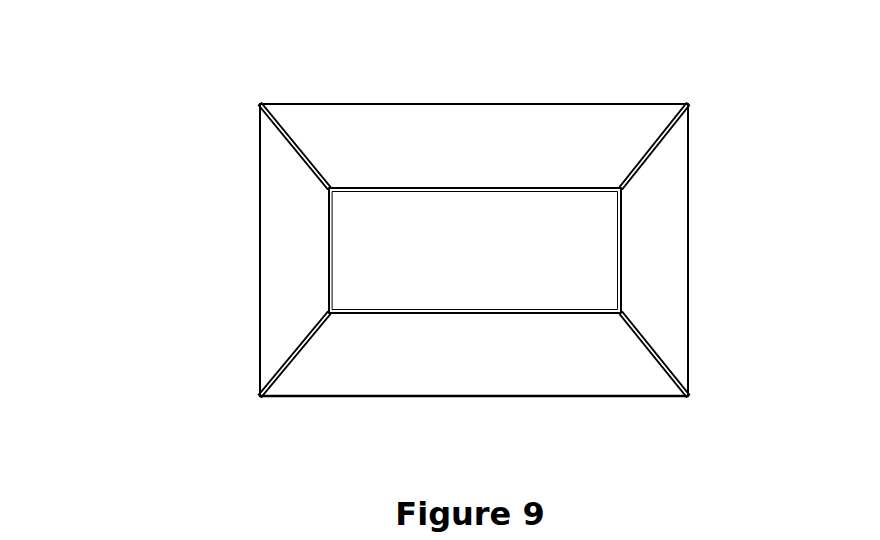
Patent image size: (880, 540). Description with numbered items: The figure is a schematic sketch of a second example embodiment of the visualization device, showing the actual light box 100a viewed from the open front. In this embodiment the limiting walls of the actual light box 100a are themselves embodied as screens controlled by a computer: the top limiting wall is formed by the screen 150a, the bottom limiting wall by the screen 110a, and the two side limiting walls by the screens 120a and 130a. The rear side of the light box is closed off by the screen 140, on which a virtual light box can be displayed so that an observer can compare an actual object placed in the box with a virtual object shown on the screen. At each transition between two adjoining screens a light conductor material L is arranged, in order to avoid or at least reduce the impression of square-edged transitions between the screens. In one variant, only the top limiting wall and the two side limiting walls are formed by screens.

The actual light box 100a is at (421, 253).
The screen 110a is at (465, 378).
The screen 120a is at (274, 237).
The screen 130a is at (676, 246).
The screen 140 is at (430, 218).
The screen 150a is at (588, 128).
The light conductor material L is at (293, 147).